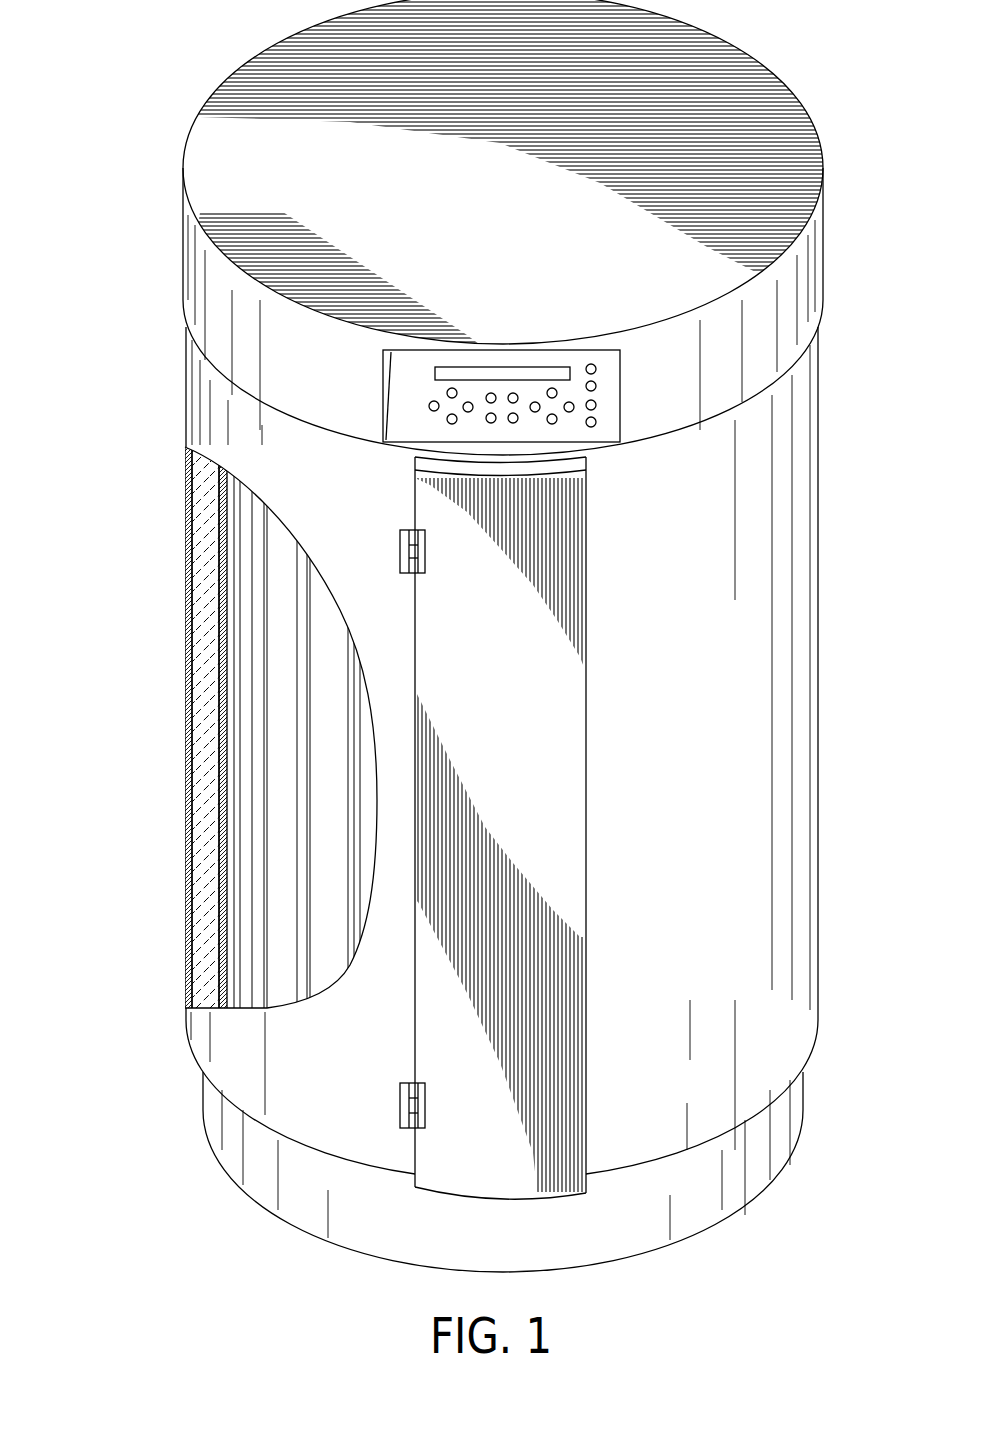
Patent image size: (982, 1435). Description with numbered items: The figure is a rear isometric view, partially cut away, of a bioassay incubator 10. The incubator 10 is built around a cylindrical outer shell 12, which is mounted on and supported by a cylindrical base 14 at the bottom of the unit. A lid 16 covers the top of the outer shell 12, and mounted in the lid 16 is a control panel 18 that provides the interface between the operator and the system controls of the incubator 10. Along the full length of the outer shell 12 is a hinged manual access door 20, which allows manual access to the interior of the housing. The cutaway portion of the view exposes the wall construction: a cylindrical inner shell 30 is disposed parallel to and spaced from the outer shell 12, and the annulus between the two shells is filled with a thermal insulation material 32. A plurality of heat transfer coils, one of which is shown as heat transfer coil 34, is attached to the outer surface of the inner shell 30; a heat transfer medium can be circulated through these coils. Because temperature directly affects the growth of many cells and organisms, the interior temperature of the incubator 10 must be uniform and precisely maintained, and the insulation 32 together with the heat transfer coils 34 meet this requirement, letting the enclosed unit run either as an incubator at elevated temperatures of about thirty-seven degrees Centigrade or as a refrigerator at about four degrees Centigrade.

The incubator 10 is at (128, 350).
The cylindrical outer shell 12 is at (788, 473).
The cylindrical base 14 is at (625, 1238).
The lid 16 is at (217, 163).
The control panel 18 is at (603, 406).
The manual access door 20 is at (437, 1032).
The cylindrical inner shell 30 is at (223, 685).
The thermal insulation material 32 is at (207, 631).
The heat transfer coil 34 is at (255, 915).